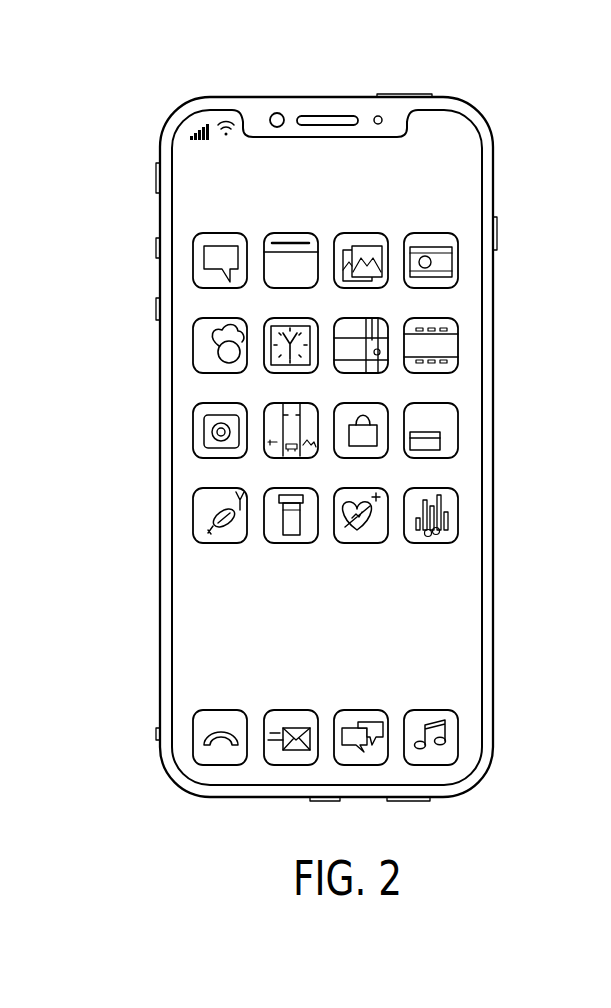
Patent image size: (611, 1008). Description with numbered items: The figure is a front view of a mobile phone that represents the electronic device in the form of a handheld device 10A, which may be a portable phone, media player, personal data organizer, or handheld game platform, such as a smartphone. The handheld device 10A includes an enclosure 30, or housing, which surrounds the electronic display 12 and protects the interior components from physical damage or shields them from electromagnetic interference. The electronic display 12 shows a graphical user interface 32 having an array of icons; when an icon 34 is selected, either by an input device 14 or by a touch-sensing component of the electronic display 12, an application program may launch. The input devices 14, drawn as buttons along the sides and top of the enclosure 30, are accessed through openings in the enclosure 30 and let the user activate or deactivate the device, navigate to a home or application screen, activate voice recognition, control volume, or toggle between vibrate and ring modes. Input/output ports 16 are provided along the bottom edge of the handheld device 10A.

The handheld device 10A is at (148, 83).
The electronic display 12 is at (484, 577).
The input devices 14 is at (404, 94).
The input/output (I/O) ports 16 is at (212, 798).
The enclosure 30 is at (493, 181).
The graphical user interface (GUI) 32 is at (373, 499).
The icon 34 is at (356, 545).